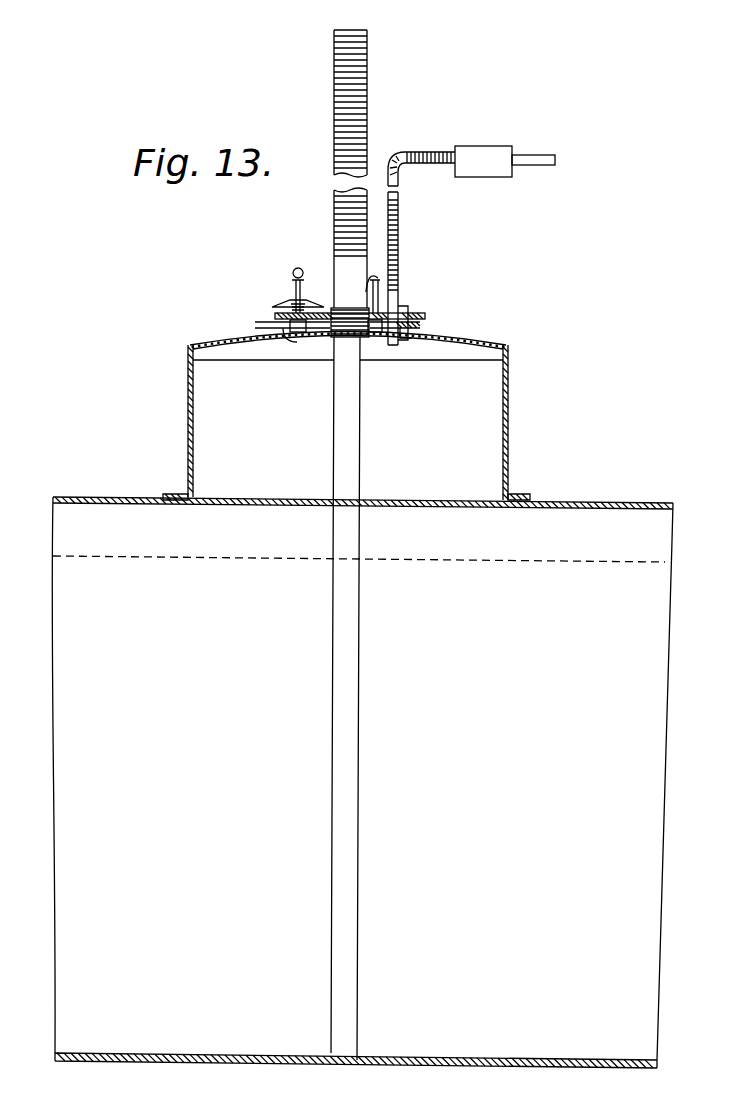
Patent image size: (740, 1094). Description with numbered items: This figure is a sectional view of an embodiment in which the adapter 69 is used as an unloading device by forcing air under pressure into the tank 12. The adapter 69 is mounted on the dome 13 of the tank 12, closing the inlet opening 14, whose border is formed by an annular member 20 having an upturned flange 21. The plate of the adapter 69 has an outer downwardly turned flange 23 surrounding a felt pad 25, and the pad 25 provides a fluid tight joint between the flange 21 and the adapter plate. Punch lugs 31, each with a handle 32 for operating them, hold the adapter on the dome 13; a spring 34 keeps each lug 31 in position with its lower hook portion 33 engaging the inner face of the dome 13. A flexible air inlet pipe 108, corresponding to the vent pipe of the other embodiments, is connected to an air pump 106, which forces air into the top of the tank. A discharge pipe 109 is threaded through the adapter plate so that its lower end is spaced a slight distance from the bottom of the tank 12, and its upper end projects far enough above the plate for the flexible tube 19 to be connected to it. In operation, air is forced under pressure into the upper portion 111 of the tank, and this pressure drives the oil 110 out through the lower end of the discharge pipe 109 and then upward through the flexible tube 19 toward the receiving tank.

The flexible tube 19 is at (367, 76).
The air pump 106 is at (500, 160).
The flexible air inlet pipe 108 is at (398, 215).
The discharge pipe 109 is at (340, 285).
The dome 13 is at (506, 465).
The inlet opening 14 is at (320, 330).
The downwardly turned flange 23 is at (426, 316).
The annular member 20 is at (422, 326).
The punch lug 31 is at (293, 290).
The handle 32 is at (300, 280).
The spring 34 is at (272, 306).
The adapter 69 is at (312, 318).
The lower hook portion 33 is at (285, 333).
The felt pad 25 is at (410, 318).
The upturned flange 21 is at (405, 328).
The upper portion of the tank 111 is at (558, 526).
The tank 12 is at (605, 509).
The oil 110 is at (455, 566).